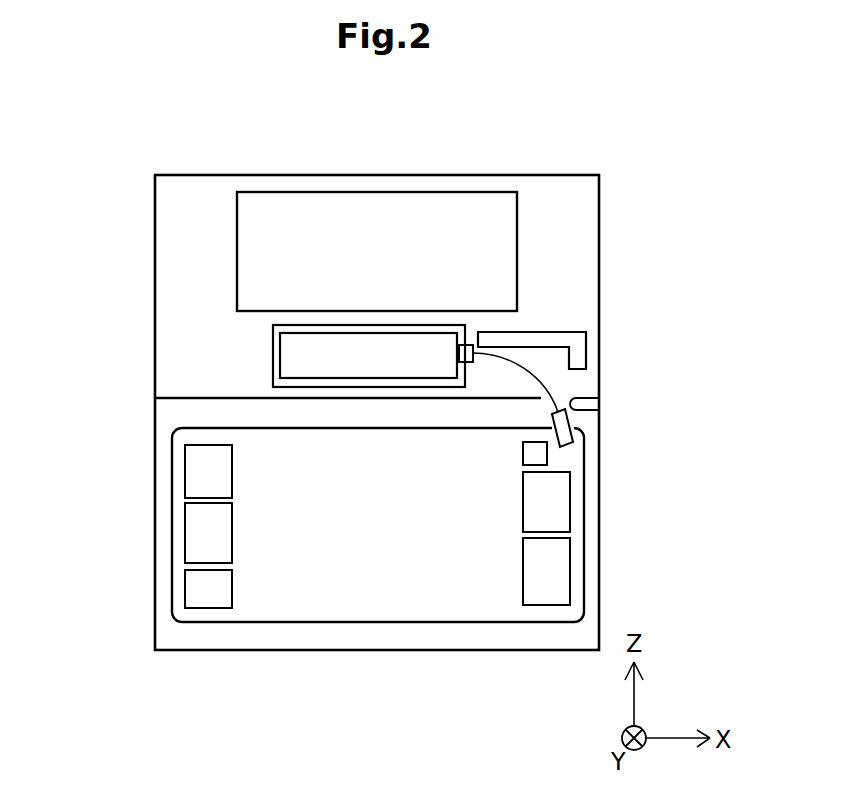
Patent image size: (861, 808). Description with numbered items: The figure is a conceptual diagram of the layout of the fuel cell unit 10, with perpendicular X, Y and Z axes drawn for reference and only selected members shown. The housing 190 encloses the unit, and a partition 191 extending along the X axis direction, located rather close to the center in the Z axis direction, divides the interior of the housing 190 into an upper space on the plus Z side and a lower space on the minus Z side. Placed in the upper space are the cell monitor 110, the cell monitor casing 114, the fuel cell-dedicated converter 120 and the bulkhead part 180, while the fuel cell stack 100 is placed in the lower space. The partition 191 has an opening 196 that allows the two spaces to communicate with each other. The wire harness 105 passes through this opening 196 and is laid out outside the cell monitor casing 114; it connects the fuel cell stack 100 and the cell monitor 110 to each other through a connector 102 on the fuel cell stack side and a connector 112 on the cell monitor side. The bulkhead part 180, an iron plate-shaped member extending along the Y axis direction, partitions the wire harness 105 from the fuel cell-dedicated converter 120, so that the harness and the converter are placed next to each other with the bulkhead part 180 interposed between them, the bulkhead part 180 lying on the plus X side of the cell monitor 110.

The fuel cell unit 10 is at (652, 176).
The fuel cell stack 100 is at (375, 623).
The connector 102 is at (566, 445).
The wire harness 105 is at (547, 380).
The cell monitor 110 is at (273, 352).
The connector 112 is at (470, 343).
The cell monitor casing 114 is at (273, 339).
The fuel cell-dedicated converter 120 is at (376, 192).
The bulkhead part 180 is at (587, 347).
The housing 190 is at (155, 356).
The partition 191 is at (178, 398).
The opening 196 is at (603, 410).